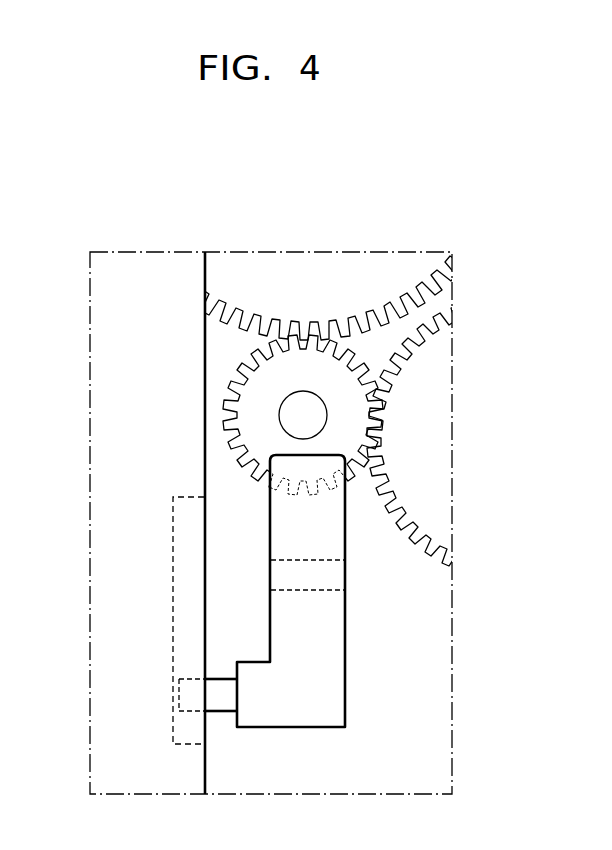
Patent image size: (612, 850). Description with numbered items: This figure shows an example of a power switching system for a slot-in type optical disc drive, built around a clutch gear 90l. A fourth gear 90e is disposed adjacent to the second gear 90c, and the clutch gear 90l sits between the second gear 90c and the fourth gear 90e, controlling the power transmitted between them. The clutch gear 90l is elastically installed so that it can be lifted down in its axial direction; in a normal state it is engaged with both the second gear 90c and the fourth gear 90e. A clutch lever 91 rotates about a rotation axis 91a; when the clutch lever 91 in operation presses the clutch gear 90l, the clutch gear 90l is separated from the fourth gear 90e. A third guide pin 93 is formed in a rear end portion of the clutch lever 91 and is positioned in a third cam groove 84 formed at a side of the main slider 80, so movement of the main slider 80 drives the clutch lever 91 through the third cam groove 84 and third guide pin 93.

The main slider 80 is at (100, 655).
The third cam groove 84 is at (175, 594).
The second gear 90c is at (354, 266).
The clutch gear 90l is at (232, 403).
The fourth gear 90e is at (440, 430).
The clutch lever 91 is at (297, 728).
The rotation axis 91a is at (330, 589).
The third guide pin 93 is at (222, 680).